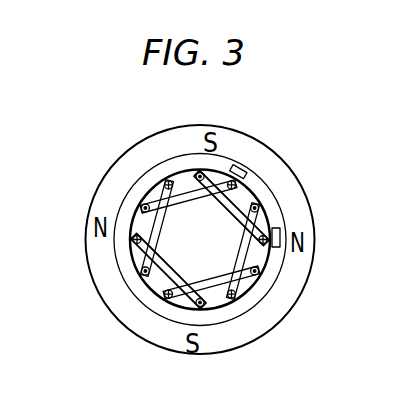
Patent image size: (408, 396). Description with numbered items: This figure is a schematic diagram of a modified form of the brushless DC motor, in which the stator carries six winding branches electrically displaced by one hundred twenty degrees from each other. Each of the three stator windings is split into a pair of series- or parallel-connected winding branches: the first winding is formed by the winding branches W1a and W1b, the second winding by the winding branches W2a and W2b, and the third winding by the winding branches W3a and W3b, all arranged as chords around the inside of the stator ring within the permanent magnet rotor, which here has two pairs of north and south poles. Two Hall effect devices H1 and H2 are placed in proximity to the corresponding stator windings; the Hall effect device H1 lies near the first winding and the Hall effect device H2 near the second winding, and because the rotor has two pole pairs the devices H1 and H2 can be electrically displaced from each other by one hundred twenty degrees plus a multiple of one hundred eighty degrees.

The winding branch W1a is at (236, 203).
The winding branch W1b is at (160, 277).
The winding branch W2a is at (182, 196).
The winding branch W2b is at (218, 285).
The winding branch W3a is at (155, 232).
The winding branch W3b is at (247, 252).
The Hall effect device H1 is at (278, 226).
The Hall effect device H2 is at (247, 168).